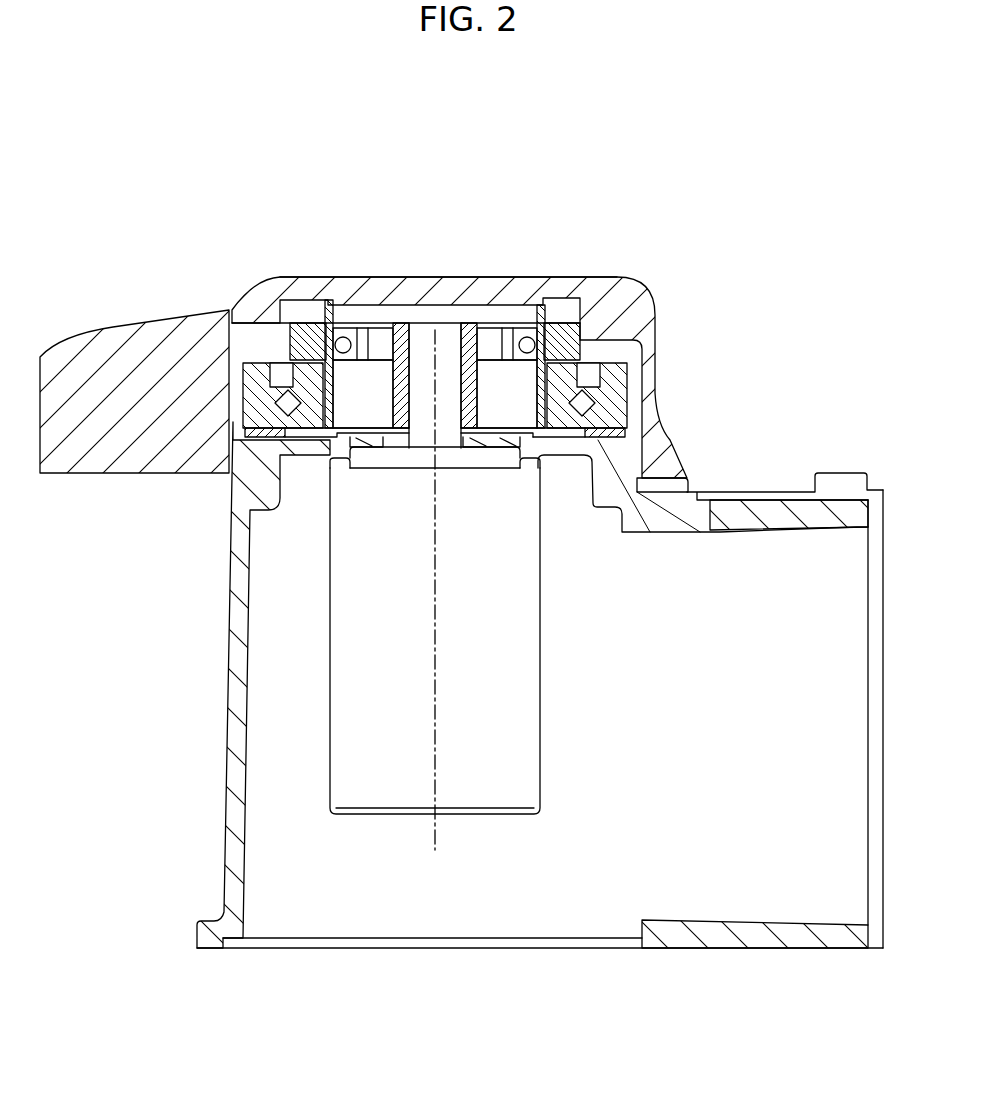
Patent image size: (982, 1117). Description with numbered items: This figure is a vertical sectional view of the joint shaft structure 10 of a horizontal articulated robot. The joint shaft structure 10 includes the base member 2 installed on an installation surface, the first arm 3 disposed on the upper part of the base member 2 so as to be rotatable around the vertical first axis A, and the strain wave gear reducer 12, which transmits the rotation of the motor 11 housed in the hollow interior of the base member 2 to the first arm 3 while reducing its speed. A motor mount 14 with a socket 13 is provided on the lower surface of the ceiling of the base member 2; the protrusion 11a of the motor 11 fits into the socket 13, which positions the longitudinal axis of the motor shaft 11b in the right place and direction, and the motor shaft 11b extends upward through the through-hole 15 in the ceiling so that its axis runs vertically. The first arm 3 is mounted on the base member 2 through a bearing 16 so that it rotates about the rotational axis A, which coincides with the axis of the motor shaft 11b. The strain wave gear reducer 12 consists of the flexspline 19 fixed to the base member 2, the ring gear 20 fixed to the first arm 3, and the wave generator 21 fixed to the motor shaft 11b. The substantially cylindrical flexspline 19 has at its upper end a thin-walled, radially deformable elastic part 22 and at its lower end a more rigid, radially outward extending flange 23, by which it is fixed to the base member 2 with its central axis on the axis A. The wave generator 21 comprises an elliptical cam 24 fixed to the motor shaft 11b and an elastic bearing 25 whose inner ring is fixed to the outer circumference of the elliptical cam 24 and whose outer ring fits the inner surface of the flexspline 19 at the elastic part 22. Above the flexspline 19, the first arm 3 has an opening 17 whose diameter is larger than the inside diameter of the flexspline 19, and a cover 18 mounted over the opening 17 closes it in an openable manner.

The base member 2 is at (226, 732).
The first arm 3 is at (108, 322).
The joint shaft structure 10 is at (429, 361).
The motor 11 is at (553, 626).
The protrusion 11a is at (330, 465).
The motor shaft 11b is at (397, 413).
The strain wave gear reducer 12 is at (240, 355).
The socket 13 is at (366, 468).
The motor mount 14 is at (380, 457).
The through-hole 15 is at (480, 440).
The bearing 16 is at (231, 398).
The opening 17 is at (293, 277).
The cover 18 is at (421, 277).
The flexspline 19 is at (571, 452).
The ring gear 20 is at (557, 322).
The wave generator 21 is at (523, 322).
The elastic part 22 is at (524, 440).
The flange 23 is at (625, 432).
The elliptical cam 24 is at (477, 370).
The elastic bearing 25 is at (341, 328).
The first axis A is at (437, 775).